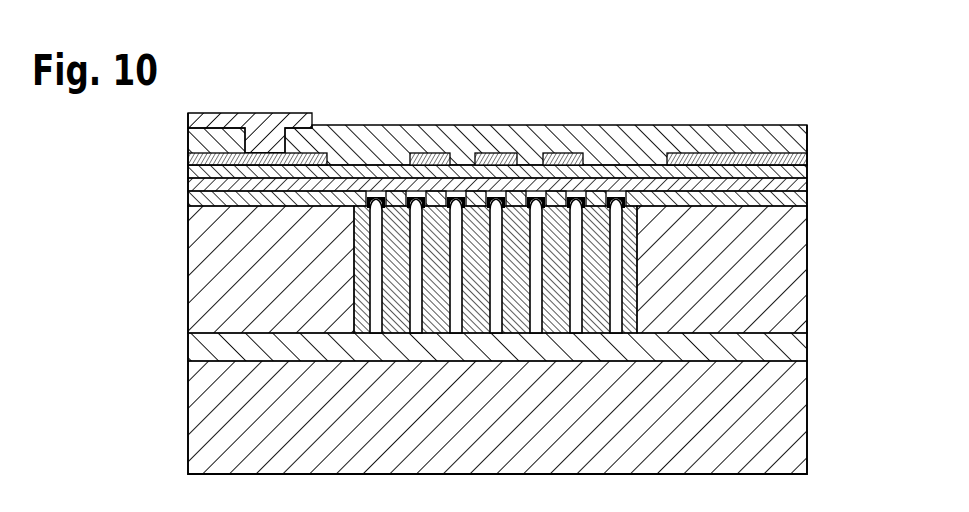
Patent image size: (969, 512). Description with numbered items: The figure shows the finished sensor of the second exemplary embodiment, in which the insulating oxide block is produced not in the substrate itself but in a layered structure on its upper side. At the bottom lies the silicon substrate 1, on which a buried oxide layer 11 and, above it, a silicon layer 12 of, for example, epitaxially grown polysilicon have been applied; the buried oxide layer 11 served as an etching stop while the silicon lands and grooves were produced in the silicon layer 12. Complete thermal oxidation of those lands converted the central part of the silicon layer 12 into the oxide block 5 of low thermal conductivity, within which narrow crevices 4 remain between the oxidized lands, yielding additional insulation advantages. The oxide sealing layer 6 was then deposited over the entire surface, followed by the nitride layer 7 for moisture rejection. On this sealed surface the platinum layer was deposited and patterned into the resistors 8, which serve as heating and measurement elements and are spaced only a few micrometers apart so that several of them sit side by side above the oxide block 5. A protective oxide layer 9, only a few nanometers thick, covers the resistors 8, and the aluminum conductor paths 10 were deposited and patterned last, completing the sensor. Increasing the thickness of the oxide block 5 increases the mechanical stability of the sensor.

The silicon substrate 1 is at (800, 428).
The crevice 4 is at (617, 206).
The oxide block 5 is at (398, 206).
The oxide sealing layer 6 is at (804, 185).
The nitride layer 7 is at (806, 170).
The resistors 8 is at (498, 153).
The protective oxide layer 9 is at (361, 149).
The aluminum conductor paths 10 is at (258, 124).
The buried oxide layer 11 is at (800, 348).
The silicon layer 12 is at (800, 293).